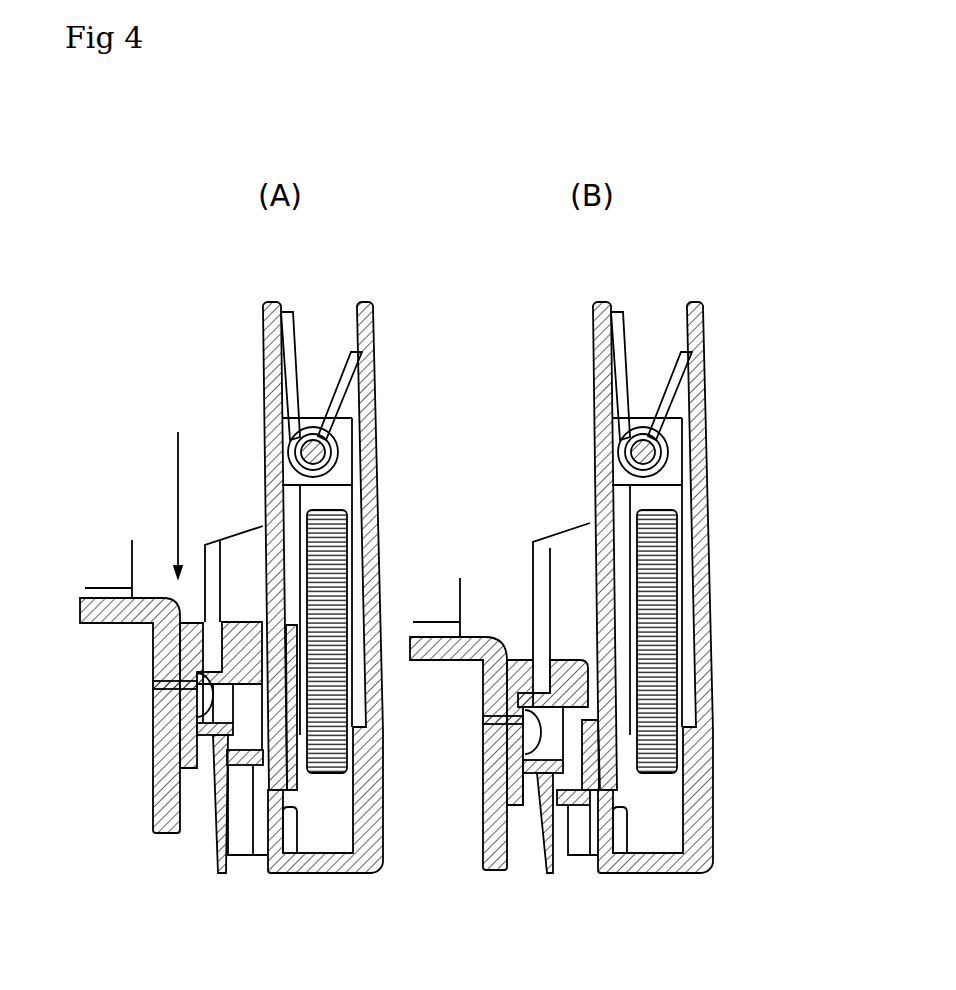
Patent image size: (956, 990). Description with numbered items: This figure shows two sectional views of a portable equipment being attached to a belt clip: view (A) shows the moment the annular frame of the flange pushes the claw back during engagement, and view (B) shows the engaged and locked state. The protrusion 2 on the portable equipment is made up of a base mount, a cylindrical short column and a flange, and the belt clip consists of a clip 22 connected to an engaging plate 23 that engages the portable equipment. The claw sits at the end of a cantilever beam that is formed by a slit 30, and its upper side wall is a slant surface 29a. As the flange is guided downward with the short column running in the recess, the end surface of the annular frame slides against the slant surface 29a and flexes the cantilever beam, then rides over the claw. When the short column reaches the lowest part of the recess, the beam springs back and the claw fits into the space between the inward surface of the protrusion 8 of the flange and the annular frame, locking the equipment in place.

The protrusion 2 is at (265, 722).
The protrusion of the flange 8 is at (573, 660).
The clip 22 is at (378, 406).
The engaging plate 23 is at (268, 346).
The slant surface 29a is at (208, 687).
The slit 30 is at (285, 805).